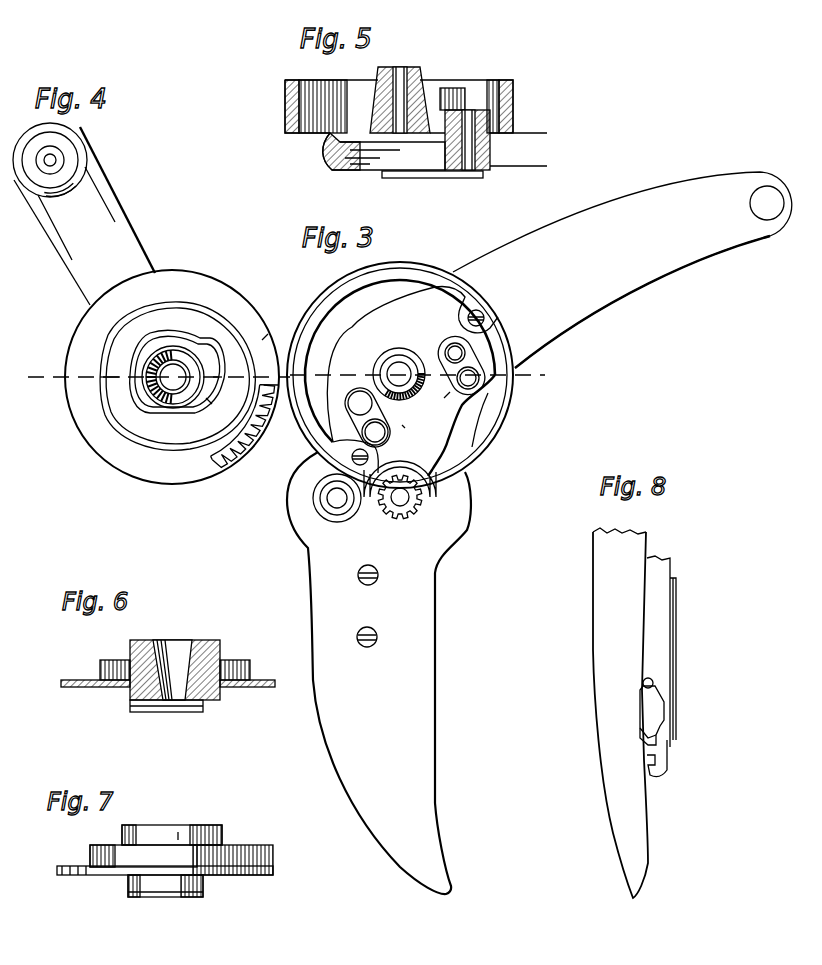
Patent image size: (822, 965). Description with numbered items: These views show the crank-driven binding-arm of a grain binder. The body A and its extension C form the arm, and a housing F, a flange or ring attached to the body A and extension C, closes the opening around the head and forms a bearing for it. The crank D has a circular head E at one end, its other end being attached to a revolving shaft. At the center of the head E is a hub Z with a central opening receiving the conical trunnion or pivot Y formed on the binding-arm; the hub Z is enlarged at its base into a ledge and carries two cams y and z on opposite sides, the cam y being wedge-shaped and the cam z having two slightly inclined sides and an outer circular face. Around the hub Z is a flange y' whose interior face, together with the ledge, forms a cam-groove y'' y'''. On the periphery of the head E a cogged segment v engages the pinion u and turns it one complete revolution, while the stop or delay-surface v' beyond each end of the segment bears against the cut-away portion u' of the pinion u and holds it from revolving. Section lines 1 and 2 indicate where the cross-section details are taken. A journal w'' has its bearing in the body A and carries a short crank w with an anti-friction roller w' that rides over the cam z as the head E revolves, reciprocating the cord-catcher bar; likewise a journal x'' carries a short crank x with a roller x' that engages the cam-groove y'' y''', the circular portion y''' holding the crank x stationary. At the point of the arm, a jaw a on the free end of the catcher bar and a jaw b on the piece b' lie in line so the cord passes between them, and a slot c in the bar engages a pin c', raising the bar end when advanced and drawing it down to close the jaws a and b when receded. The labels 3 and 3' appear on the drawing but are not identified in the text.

In FIG. 3, the body A is at (385, 602).
In FIG. 8, the body A is at (620, 713).
In FIG. 3, the extension C is at (622, 270).
In FIG. 4, the crank D is at (84, 214).
In FIG. 6, the crank D is at (166, 716).
In FIG. 7, the crank D is at (165, 894).
In FIG. 4, the head E is at (172, 377).
In FIG. 6, the head E is at (168, 686).
In FIG. 7, the head E is at (165, 880).
In FIG. 3, the housing F is at (400, 363).
In FIG. 5, the trunnion or pivot Y is at (421, 80).
In FIG. 3, the trunnion or pivot Y is at (401, 362).
In FIG. 4, the hub Z is at (173, 377).
In FIG. 6, the hub Z is at (175, 670).
In FIG. 3, the section line 1 is at (423, 376).
In FIG. 4, the section line 2 is at (151, 377).
In FIG. 4, the bore 3 is at (213, 371).
In FIG. 7, the bore 3' is at (160, 834).
In FIG. 8, the jaw a is at (657, 758).
In FIG. 8, the jaw b is at (634, 736).
In FIG. 8, the piece b' is at (661, 651).
In FIG. 8, the slot c is at (669, 715).
In FIG. 8, the pin c' is at (655, 675).
In FIG. 3, the pinion u is at (400, 490).
In FIG. 3, the delay-shoe u' is at (414, 468).
In FIG. 7, the cogged segment v is at (249, 860).
In FIG. 4, the stop or delay-surface v' is at (179, 389).
In FIG. 3, the short crank or arm w is at (368, 417).
In FIG. 3, the anti-friction roller w' is at (405, 433).
In FIG. 3, the journal or pivot w'' is at (354, 397).
In FIG. 3, the short crank or arm x is at (463, 365).
In FIG. 3, the anti-friction roller x' is at (462, 350).
In FIG. 3, the journal or pivot x'' is at (438, 401).
In FIG. 4, the cam y is at (177, 376).
In FIG. 4, the flange y' is at (101, 372).
In FIG. 7, the flange y' is at (143, 856).
In FIG. 4, the cam-groove y'' is at (164, 381).
In FIG. 4, the cam-groove y''' is at (218, 408).
In FIG. 4, the cam z is at (236, 448).
In FIG. 7, the cam z is at (177, 827).